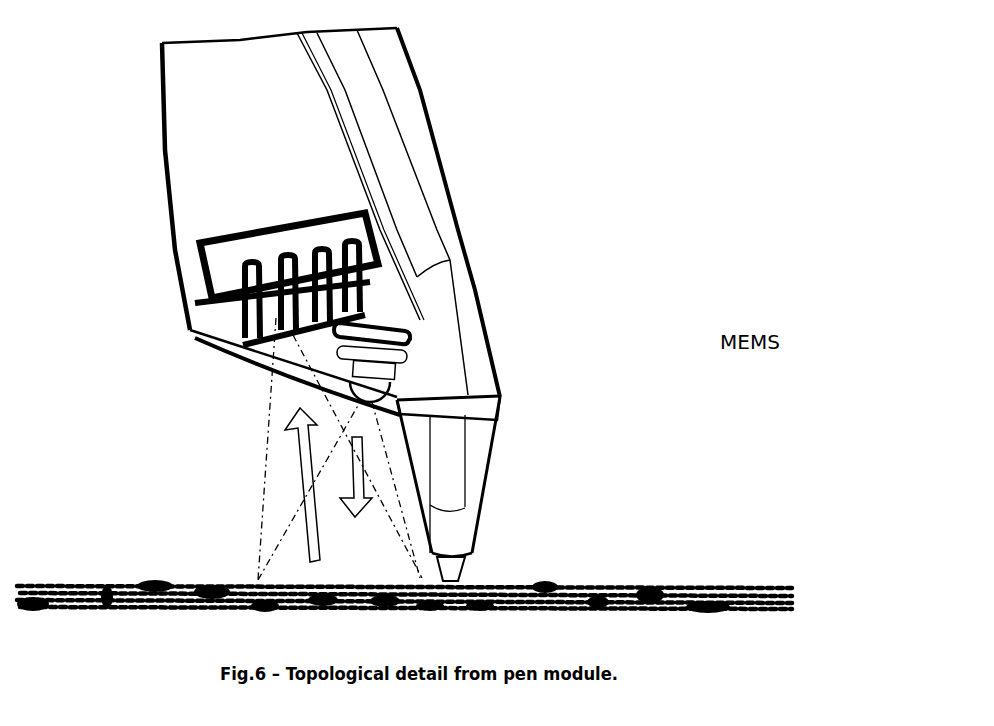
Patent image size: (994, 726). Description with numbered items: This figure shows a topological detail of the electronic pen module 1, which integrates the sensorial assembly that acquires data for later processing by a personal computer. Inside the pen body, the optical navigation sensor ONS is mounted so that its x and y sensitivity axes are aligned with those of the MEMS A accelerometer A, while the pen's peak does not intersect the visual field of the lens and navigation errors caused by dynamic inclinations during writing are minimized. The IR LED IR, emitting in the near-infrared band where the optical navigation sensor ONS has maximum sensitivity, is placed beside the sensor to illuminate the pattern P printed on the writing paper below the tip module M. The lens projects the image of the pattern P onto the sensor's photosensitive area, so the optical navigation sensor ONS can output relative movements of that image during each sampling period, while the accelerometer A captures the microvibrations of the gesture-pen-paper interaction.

The electronic pen module 1 is at (490, 165).
The optical navigation sensor ONS is at (388, 243).
The MEMS A accelerometer A is at (428, 341).
The IR LED IR is at (423, 372).
The pen tip module M is at (483, 473).
The pattern P is at (596, 563).